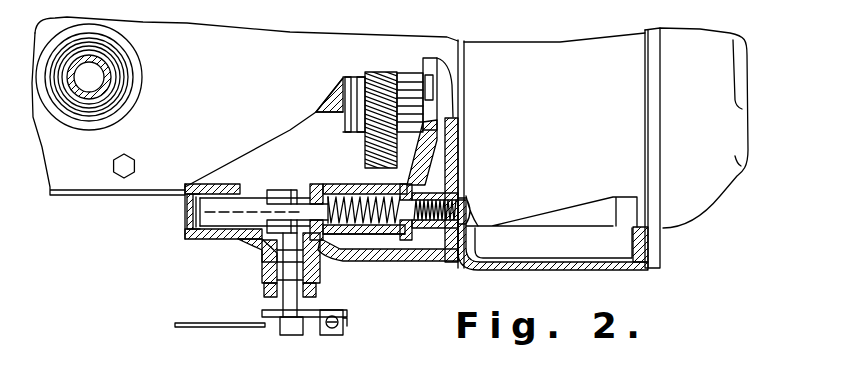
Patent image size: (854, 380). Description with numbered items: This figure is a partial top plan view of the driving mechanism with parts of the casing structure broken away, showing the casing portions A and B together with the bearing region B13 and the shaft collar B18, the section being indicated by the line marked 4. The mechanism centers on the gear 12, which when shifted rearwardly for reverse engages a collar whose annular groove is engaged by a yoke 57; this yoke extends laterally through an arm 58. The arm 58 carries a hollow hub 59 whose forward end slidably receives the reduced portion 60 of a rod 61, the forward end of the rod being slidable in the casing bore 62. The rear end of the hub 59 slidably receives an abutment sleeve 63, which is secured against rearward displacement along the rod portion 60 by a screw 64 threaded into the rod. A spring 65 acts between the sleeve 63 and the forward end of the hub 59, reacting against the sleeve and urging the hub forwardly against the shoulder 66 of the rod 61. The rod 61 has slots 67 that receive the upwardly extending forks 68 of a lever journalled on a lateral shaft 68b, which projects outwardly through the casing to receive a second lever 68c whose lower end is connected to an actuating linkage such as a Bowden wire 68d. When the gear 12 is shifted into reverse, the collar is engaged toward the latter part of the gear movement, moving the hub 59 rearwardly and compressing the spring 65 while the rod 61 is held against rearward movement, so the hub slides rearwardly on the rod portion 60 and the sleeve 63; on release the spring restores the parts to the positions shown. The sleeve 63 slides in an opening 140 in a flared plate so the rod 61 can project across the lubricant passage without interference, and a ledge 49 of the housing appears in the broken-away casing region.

The gear housing bracket B is at (95, 190).
The bearing boss B13 is at (105, 84).
The section line 4- 4 is at (270, 14).
The motor housing A is at (537, 58).
The ledge of housing 49 is at (558, 218).
The opening 140 is at (467, 216).
The screw 64 is at (463, 201).
The hollow hub 59 is at (328, 197).
The spring 65 is at (373, 235).
The abutment sleeve 63 is at (427, 237).
The reduced portion 60 is at (307, 204).
The rod 61 is at (255, 196).
The casing bore 62 is at (200, 240).
The shoulder 66 is at (296, 194).
The slots 67 is at (258, 244).
The forks 68 is at (264, 258).
The lateral shaft 68b is at (268, 291).
The Bowden wire 68d is at (200, 323).
The lever 68c is at (340, 309).
The gear 12 is at (365, 141).
The shaft collar B18 is at (408, 73).
The yoke 57 is at (433, 80).
The arm 58 is at (437, 147).